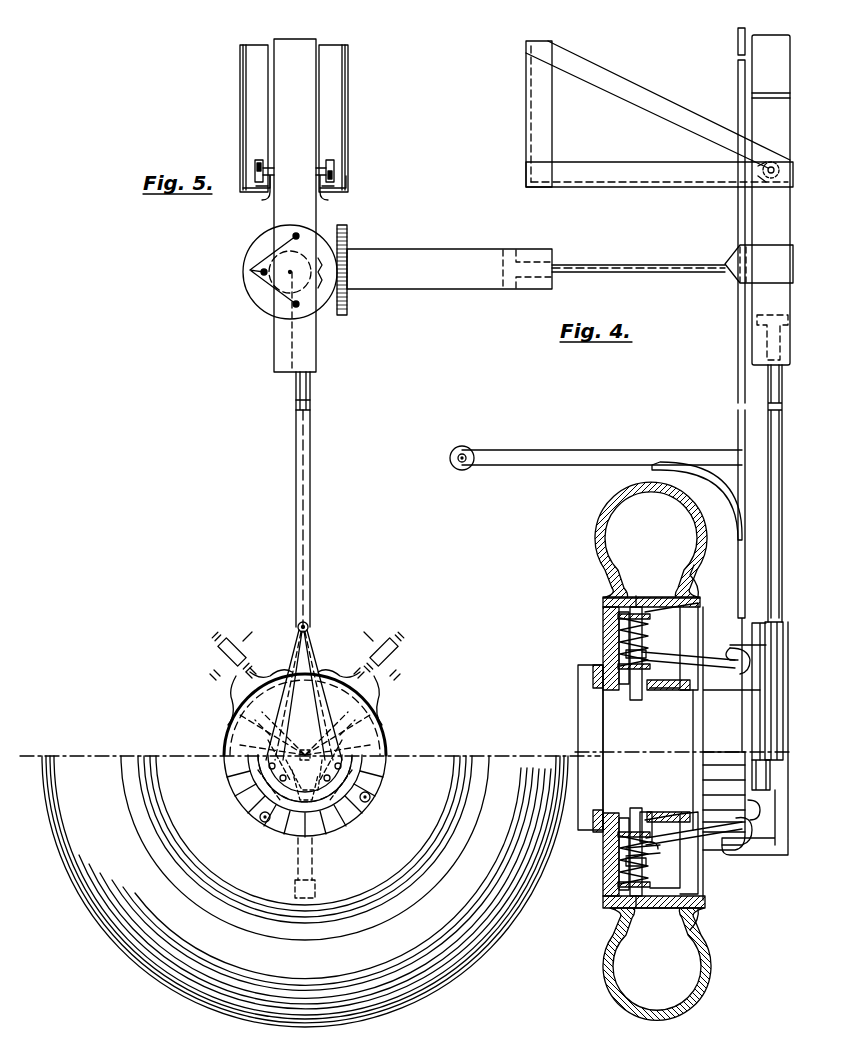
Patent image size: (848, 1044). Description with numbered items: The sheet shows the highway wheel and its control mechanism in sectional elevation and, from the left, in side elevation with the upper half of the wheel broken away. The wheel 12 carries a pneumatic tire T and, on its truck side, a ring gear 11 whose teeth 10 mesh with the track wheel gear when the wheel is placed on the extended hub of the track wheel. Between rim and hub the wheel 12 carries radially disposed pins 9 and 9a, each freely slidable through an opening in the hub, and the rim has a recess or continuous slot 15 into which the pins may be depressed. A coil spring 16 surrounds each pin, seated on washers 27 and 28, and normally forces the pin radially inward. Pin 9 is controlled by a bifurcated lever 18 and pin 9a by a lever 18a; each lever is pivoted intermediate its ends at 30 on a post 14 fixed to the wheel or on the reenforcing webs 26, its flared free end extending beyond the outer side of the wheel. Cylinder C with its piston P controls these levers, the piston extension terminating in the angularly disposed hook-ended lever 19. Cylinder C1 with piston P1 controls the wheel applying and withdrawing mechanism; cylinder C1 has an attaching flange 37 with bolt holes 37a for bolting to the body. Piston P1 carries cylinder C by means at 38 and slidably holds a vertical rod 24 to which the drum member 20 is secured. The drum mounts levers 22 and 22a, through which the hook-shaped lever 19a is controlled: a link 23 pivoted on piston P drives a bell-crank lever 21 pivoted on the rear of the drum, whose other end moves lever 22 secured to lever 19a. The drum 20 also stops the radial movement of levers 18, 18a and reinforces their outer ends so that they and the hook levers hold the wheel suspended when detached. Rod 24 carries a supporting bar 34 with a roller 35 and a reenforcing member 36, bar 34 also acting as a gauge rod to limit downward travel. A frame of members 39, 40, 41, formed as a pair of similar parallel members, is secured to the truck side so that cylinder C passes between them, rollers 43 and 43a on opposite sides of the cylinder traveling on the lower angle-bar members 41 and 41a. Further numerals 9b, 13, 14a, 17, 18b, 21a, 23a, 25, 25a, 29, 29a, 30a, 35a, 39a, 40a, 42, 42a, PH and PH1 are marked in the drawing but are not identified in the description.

In FIG. 5, the pin 9 is at (312, 858).
In FIG. 4, the pin 9 is at (642, 816).
In FIG. 5, the pin 9a is at (220, 652).
In FIG. 4, the pin 9a is at (637, 700).
In FIG. 5, the axle shaft 9b is at (398, 652).
In FIG. 4, the teeth 10 is at (582, 686).
In FIG. 4, the ring gear 11 is at (594, 680).
In FIG. 5, the highway wheel 12 is at (392, 836).
In FIG. 4, the highway wheel 12 is at (702, 600).
In FIG. 4, the drum 13 is at (720, 840).
In FIG. 4, the post 14 is at (684, 870).
In FIG. 4, the rim 14a is at (684, 628).
In FIG. 5, the slot 15 is at (316, 891).
In FIG. 4, the slot 15 is at (640, 596).
In FIG. 4, the coil spring 16 is at (619, 630).
In FIG. 4, the collar 17 is at (640, 816).
In FIG. 4, the lever 18 is at (699, 839).
In FIG. 5, the lever 18a is at (262, 684).
In FIG. 4, the lever 18a is at (714, 662).
In FIG. 5, the lever 18b is at (358, 684).
In FIG. 4, the lever 19 is at (760, 852).
In FIG. 4, the hook-shaped lever 19a is at (736, 646).
In FIG. 4, the drum member 20 is at (704, 732).
In FIG. 5, the bell-crank lever 21 is at (372, 797).
In FIG. 4, the bell-crank lever 21 is at (758, 817).
In FIG. 5, the hook 21a is at (264, 800).
In FIG. 5, the lever 22 is at (262, 722).
In FIG. 4, the lever 22 is at (770, 780).
In FIG. 5, the lever 22a is at (350, 722).
In FIG. 5, the link 23 is at (296, 650).
In FIG. 4, the link 23 is at (765, 645).
In FIG. 5, the arm 23a is at (315, 653).
In FIG. 4, the rod 24 is at (738, 352).
In FIG. 5, the link 25 is at (296, 753).
In FIG. 5, the link 25a is at (314, 753).
In FIG. 4, the reenforcing webs 26 is at (712, 596).
In FIG. 4, the washer 27 is at (604, 614).
In FIG. 4, the washer 28 is at (620, 648).
In FIG. 5, the pin 29 is at (214, 672).
In FIG. 4, the pin 29 is at (648, 846).
In FIG. 5, the pin 29a is at (398, 672).
In FIG. 5, the pivot 30 is at (246, 676).
In FIG. 4, the pivot 30 is at (648, 862).
In FIG. 5, the nut 30a is at (368, 676).
In FIG. 4, the supporting bar 34 is at (595, 450).
In FIG. 4, the roller 35 is at (466, 447).
In FIG. 4, the pin 35a is at (456, 466).
In FIG. 4, the reenforcing member 36 is at (738, 500).
In FIG. 5, the attaching flange 37 is at (262, 246).
In FIG. 5, the bolt holes 37a is at (255, 270).
In FIG. 4, the carrying means 38 is at (738, 250).
In FIG. 5, the frame member 39 is at (255, 47).
In FIG. 4, the frame member 39 is at (552, 114).
In FIG. 5, the bracket 39a is at (333, 47).
In FIG. 5, the frame member 40 is at (243, 58).
In FIG. 4, the frame member 40 is at (632, 87).
In FIG. 5, the brace 40a is at (347, 56).
In FIG. 5, the lower frame member 41 is at (246, 189).
In FIG. 4, the lower frame member 41 is at (626, 162).
In FIG. 5, the lower frame member 41a is at (344, 186).
In FIG. 5, the stop 42 is at (270, 192).
In FIG. 4, the stop 42 is at (758, 173).
In FIG. 5, the stop 42a is at (322, 192).
In FIG. 5, the roller 43 is at (256, 162).
In FIG. 4, the roller 43 is at (766, 166).
In FIG. 5, the roller 43a is at (336, 168).
In FIG. 5, the cylinder C is at (282, 362).
In FIG. 4, the cylinder C is at (758, 203).
In FIG. 5, the cylinder C1 is at (428, 250).
In FIG. 5, the piston P is at (310, 480).
In FIG. 4, the piston P is at (783, 579).
In FIG. 5, the piston P1 is at (600, 264).
In FIG. 4, the piston head PH is at (757, 322).
In FIG. 5, the piston head PH1 is at (507, 252).
In FIG. 5, the pneumatic tire T is at (470, 956).
In FIG. 4, the pneumatic tire T is at (604, 512).